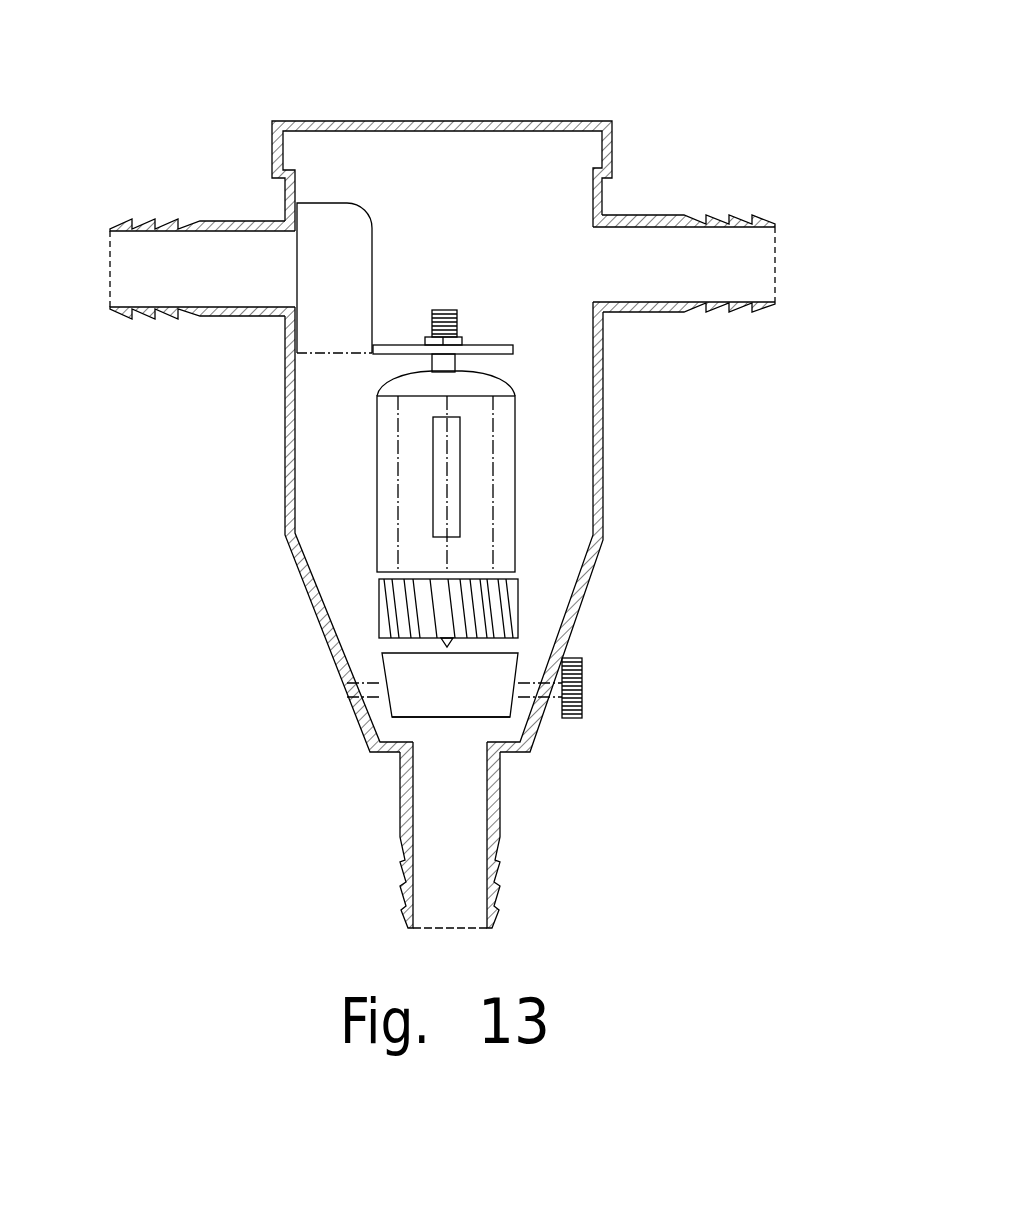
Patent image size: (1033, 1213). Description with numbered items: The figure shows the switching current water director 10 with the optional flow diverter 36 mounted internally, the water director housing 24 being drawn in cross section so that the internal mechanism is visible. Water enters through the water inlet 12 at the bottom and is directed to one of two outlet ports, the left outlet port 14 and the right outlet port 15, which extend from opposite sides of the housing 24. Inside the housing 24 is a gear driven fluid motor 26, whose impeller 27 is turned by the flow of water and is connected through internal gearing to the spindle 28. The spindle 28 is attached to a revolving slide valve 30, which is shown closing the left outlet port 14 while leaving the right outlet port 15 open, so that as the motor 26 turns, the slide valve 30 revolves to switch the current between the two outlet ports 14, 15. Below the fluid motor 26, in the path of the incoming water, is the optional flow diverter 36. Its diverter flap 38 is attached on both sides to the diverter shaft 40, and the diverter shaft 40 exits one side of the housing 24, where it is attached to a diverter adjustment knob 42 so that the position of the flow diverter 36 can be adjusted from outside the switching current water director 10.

The switching current water director 10 is at (560, 121).
The water inlet 12 is at (493, 922).
The left outlet port 14 is at (282, 257).
The right outlet port 15 is at (615, 265).
The water director housing 24 is at (607, 216).
The gear driven fluid motor 26 is at (483, 453).
The impeller 27 is at (519, 615).
The spindle 28 is at (457, 312).
The revolving slide valve 30 is at (362, 253).
The flow diverter 36 is at (383, 655).
The diverter flap 38 is at (438, 687).
The diverter shaft 40 is at (370, 690).
The diverter adjustment knob 42 is at (583, 700).